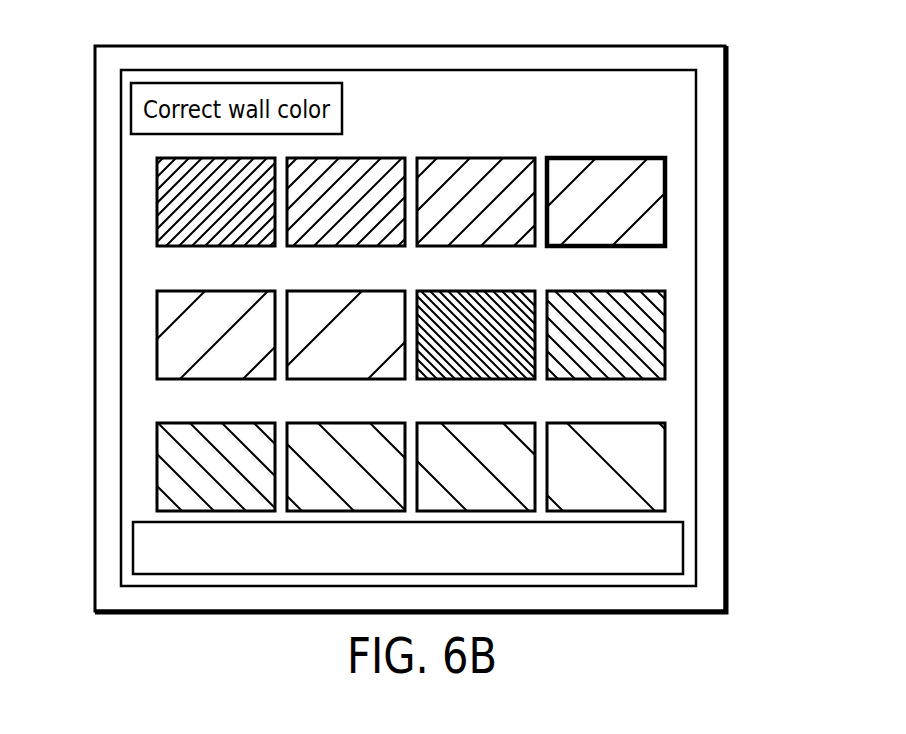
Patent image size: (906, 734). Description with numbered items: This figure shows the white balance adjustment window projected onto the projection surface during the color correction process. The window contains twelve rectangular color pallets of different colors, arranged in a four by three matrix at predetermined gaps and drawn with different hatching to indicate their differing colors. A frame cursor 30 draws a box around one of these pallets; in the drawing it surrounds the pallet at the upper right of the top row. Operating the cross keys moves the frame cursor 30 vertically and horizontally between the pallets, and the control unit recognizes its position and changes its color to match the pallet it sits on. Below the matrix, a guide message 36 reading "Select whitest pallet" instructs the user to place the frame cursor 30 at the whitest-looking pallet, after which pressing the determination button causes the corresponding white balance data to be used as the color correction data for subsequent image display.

The frame cursor 30 is at (639, 158).
The guide message 36 is at (150, 519).